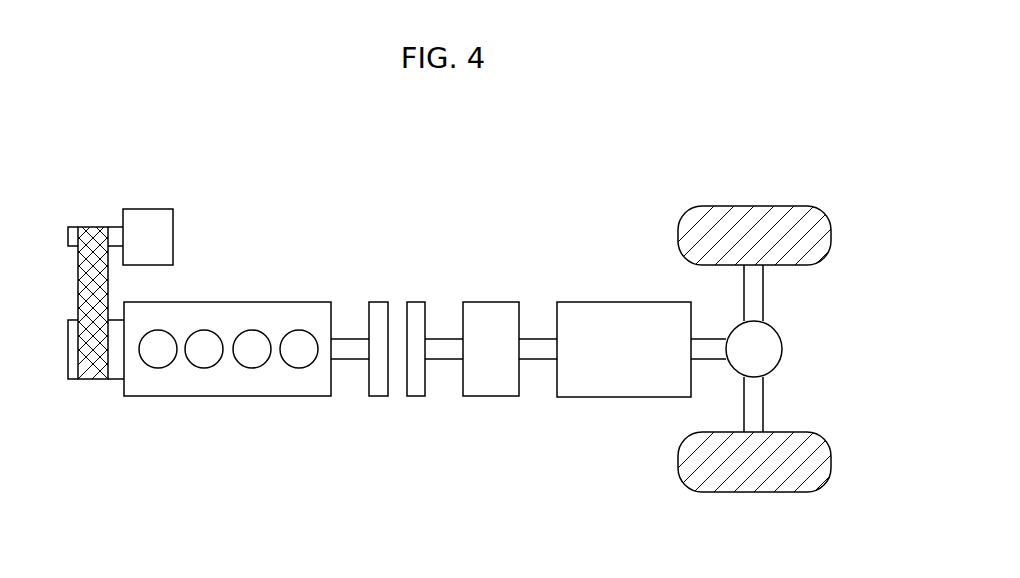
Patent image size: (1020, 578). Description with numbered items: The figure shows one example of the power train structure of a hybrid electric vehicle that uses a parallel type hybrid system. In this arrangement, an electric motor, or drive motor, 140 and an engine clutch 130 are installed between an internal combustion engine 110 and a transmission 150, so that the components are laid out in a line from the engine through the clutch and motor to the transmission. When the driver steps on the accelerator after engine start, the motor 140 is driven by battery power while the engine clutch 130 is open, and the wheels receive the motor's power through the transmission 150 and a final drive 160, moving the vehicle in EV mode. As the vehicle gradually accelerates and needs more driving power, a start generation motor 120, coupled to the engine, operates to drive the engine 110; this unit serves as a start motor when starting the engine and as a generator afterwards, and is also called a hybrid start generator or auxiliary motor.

The internal combustion engine 110 is at (295, 300).
The start generation motor 120 is at (175, 220).
The engine clutch 130 is at (422, 302).
The electric motor 140 is at (499, 302).
The transmission 150 is at (652, 301).
The final drive 160 is at (783, 328).